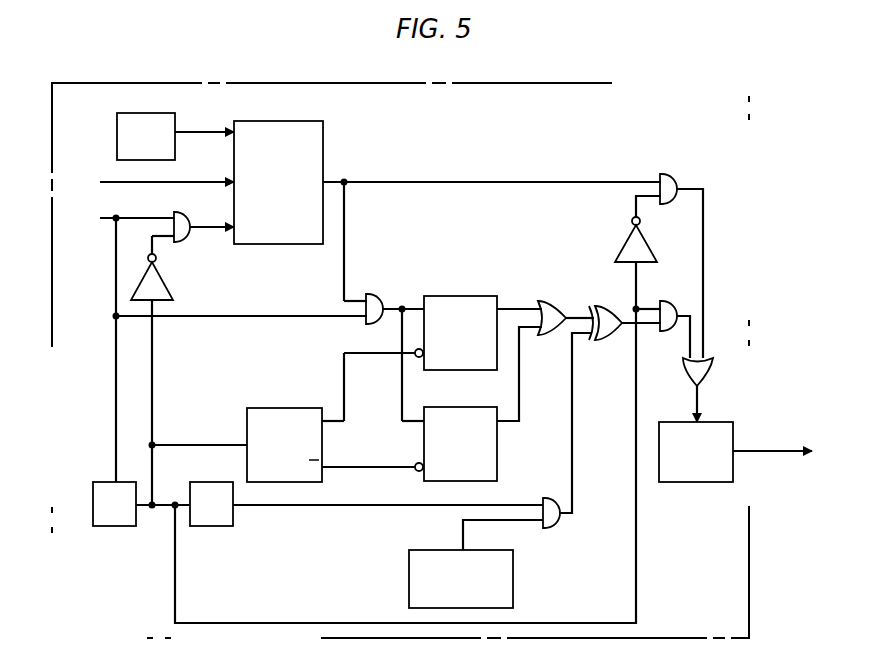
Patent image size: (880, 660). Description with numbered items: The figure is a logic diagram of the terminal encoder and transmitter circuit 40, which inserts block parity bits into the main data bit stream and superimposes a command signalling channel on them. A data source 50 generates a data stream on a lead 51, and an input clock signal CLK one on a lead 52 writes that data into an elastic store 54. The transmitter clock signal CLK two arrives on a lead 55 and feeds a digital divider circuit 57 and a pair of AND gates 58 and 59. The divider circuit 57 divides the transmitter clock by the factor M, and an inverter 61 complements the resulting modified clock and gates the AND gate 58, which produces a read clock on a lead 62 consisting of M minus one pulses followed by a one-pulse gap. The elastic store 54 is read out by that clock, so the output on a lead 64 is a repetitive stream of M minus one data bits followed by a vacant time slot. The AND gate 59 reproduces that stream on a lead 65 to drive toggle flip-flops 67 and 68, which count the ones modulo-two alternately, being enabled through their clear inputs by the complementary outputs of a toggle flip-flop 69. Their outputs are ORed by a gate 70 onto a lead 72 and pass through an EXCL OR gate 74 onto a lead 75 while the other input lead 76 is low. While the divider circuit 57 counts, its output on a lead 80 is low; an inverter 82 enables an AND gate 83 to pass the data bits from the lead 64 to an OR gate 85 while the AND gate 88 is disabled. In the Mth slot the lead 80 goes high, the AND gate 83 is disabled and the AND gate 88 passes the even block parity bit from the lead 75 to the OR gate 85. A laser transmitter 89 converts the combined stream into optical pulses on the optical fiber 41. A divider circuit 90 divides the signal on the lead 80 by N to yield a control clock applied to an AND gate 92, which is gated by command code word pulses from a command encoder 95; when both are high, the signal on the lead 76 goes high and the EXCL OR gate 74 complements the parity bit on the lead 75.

The encoder and transmitter circuit 40 is at (430, 83).
The optical fiber 41 is at (782, 449).
The data source 50 is at (117, 138).
The lead 51 is at (194, 132).
The lead 52 is at (192, 181).
The elastic store 54 is at (282, 121).
The lead 55 is at (109, 237).
The digital divider circuit 57 is at (113, 526).
The AND gate 58 is at (188, 239).
The AND gate 59 is at (372, 294).
The inverter 61 is at (168, 280).
The lead 62 is at (193, 227).
The lead 64 is at (491, 182).
The lead 65 is at (407, 297).
The toggle flip-flop 67 is at (465, 296).
The toggle flip-flop 68 is at (465, 407).
The toggle flip-flop 69 is at (285, 408).
The OR gate 70 is at (547, 300).
The lead 72 is at (570, 310).
The EXCL OR gate 74 is at (600, 310).
The lead 75 is at (626, 330).
The input lead 76 is at (570, 361).
The lead 80 is at (565, 622).
The inverter 82 is at (655, 243).
The AND gate 83 is at (664, 174).
The OR gate 85 is at (685, 373).
The AND gate 88 is at (654, 301).
The laser transmitter 89 is at (703, 483).
The divider circuit 90 is at (211, 526).
The AND gate 92 is at (547, 495).
The command encoder 95 is at (409, 578).